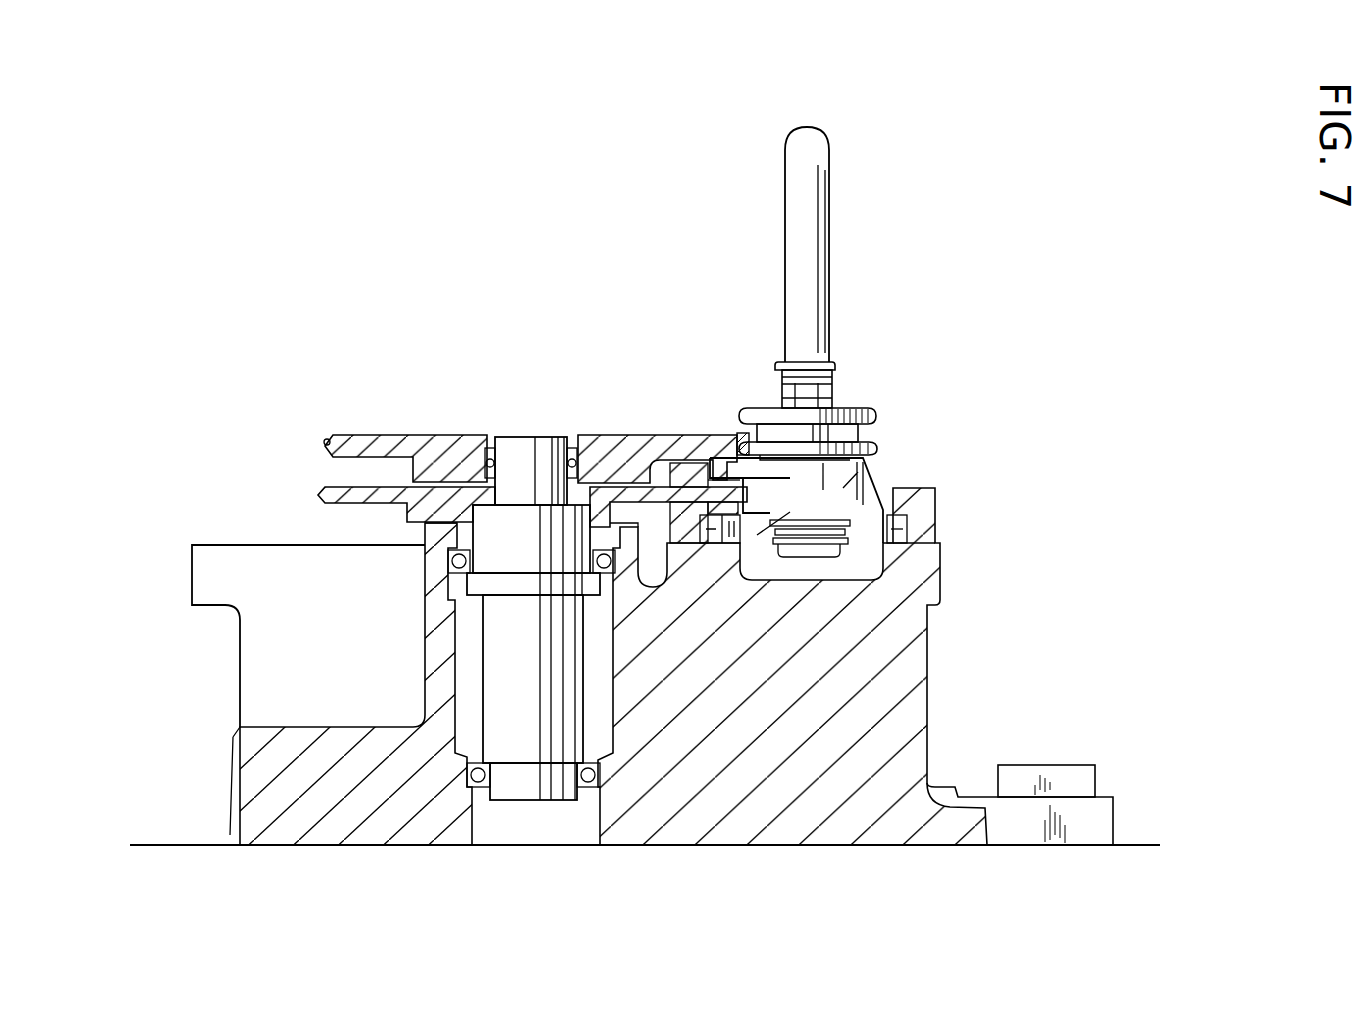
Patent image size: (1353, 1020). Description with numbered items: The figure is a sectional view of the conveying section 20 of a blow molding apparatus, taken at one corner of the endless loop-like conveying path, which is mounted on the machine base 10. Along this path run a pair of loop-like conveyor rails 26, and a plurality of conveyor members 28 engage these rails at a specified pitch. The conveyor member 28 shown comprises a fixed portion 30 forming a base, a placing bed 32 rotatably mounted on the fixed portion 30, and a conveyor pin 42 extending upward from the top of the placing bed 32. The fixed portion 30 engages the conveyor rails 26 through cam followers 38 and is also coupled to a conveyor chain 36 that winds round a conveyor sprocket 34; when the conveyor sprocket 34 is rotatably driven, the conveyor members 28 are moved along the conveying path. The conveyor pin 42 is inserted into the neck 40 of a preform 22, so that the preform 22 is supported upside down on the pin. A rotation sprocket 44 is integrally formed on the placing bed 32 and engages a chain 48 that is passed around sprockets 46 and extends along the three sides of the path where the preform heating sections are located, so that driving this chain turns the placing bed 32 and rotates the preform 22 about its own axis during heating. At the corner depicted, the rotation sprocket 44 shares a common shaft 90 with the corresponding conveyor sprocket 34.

The machine base 10 is at (175, 838).
The conveying section 20 is at (968, 215).
The preform 22 is at (812, 226).
The conveyor rails 26 is at (937, 499).
The conveyor member 28 is at (872, 405).
The fixed portion 30 is at (870, 470).
The placing bed 32 is at (865, 405).
The conveyor sprocket 34 is at (318, 490).
The conveyor chain 36 is at (692, 442).
The cam followers 38 is at (905, 548).
The neck 40 is at (778, 383).
The conveyor pin 42 is at (813, 353).
The rotation sprocket 44 is at (874, 444).
The sprockets 46 is at (617, 433).
The chain 48 is at (738, 432).
The shaft 90 is at (527, 450).